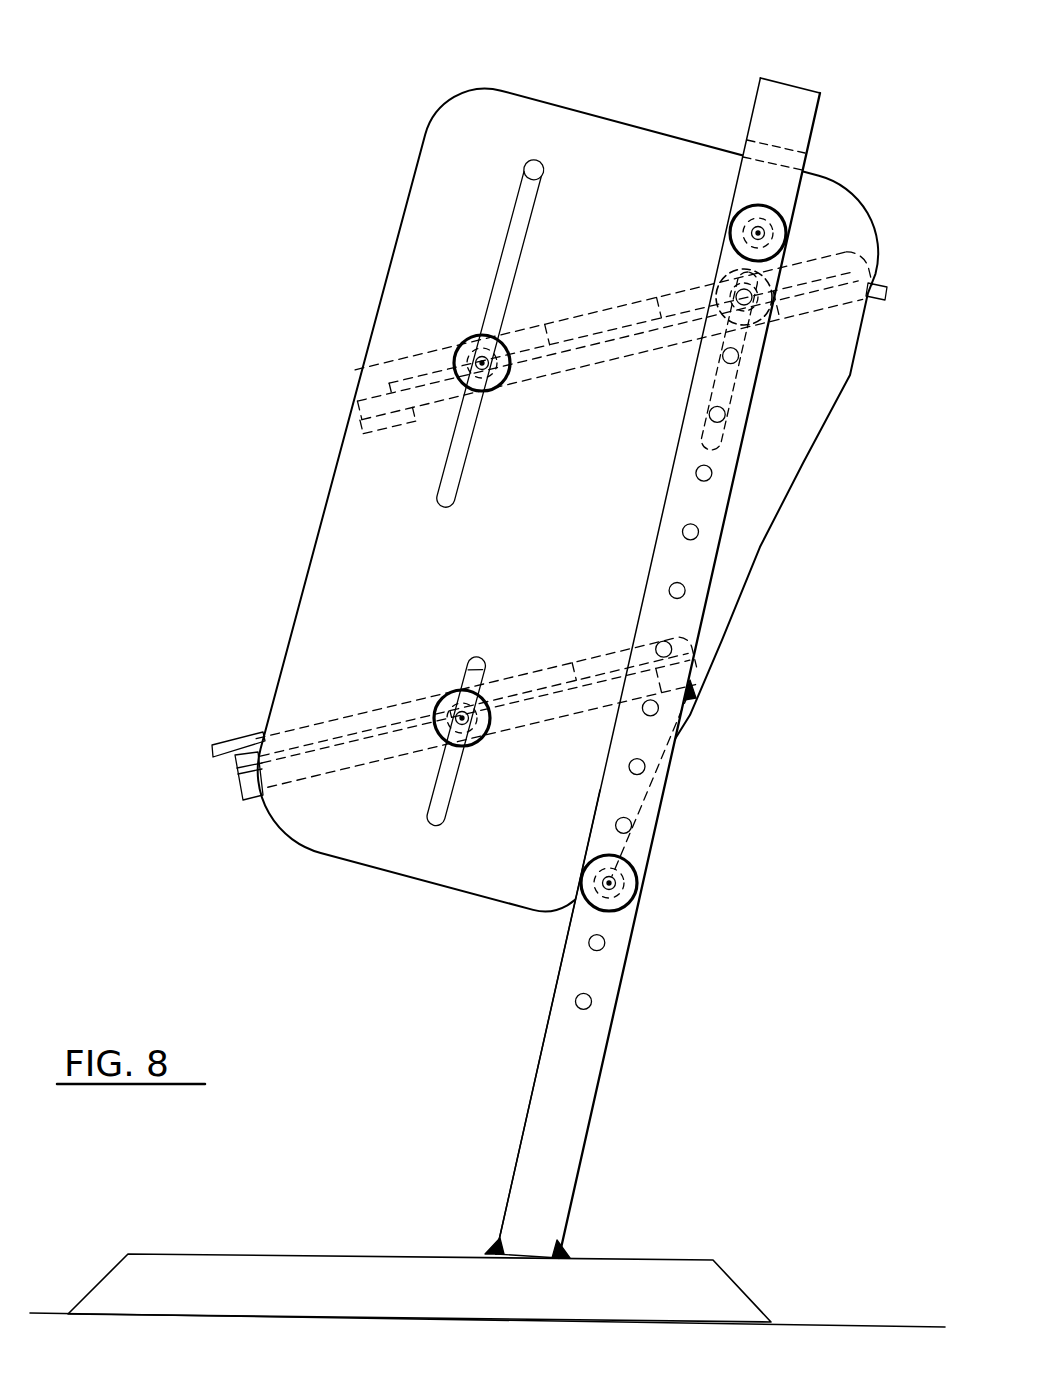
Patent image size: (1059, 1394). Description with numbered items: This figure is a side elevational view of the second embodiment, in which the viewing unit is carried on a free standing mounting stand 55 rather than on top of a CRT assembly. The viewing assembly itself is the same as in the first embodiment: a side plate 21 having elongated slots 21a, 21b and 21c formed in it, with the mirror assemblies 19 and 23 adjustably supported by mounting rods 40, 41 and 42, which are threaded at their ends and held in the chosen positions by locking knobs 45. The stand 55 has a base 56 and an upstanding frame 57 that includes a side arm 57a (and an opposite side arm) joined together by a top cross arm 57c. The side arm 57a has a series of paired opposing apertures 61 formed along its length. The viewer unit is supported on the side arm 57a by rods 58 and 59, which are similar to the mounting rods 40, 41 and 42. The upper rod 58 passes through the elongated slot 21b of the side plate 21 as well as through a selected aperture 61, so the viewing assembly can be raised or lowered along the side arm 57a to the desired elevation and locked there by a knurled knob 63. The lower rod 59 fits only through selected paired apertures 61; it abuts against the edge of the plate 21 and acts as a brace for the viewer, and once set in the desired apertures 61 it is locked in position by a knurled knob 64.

The mirror assembly 19 is at (250, 731).
The side plate 21 is at (505, 112).
The elongated slot 21a is at (517, 210).
The elongated slot 21b is at (748, 390).
The elongated slot 21c is at (483, 653).
The mirror assembly 23 is at (556, 314).
The mounting rod 40 is at (490, 372).
The mounting rod 41 is at (750, 305).
The mounting rod 42 is at (470, 725).
The locking knob 45 is at (462, 348).
The mounting stand 55 is at (487, 1239).
The base 56 is at (405, 1275).
The upstanding frame 57 is at (640, 1010).
The side arm 57a is at (561, 1076).
The top cross arm 57c is at (795, 90).
The rod 58 is at (751, 230).
The rod 59 is at (618, 887).
The aperture 61 is at (685, 525).
The knurled knob 63 is at (769, 218).
The knurled knob 64 is at (620, 870).